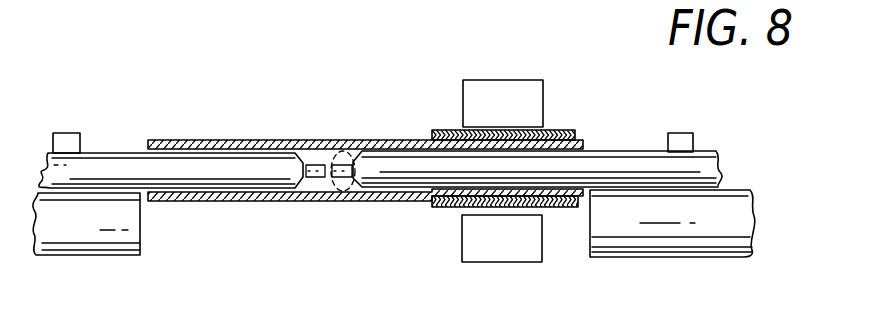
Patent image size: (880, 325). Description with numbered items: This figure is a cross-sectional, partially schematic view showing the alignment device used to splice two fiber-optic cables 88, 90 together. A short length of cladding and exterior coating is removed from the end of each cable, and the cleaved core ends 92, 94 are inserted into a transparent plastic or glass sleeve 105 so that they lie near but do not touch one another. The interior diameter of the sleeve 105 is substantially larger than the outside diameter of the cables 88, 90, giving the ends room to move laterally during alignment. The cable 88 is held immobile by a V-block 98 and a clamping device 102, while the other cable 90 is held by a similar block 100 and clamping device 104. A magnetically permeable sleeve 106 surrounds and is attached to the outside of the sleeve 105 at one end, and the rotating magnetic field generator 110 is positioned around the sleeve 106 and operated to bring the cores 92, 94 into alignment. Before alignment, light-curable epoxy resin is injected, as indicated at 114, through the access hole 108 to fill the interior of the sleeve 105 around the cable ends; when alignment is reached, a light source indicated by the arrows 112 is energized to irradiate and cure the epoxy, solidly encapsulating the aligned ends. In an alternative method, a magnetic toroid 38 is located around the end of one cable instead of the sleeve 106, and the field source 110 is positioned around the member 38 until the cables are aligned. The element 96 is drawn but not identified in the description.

The magnetic toroid 38 is at (340, 127).
The cable 88 is at (118, 152).
The cable 90 is at (638, 158).
The core end 92 is at (313, 164).
The core end 94 is at (354, 160).
The upper strip 96 is at (166, 201).
The V-block 98 is at (102, 237).
The block 100 is at (713, 233).
The clamping device 102 is at (62, 133).
The clamping device 104 is at (683, 134).
The transparent sleeve 105 is at (237, 203).
The magnetically permeable sleeve 106 is at (558, 130).
The access hole 108 is at (333, 201).
The rotating magnetic field generator 110 is at (493, 88).
The light source 112 is at (183, 128).
The epoxy injection 114 is at (328, 222).